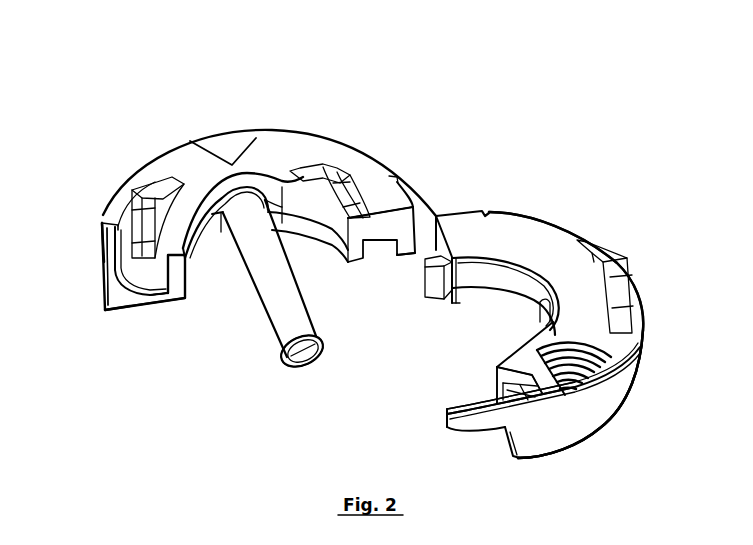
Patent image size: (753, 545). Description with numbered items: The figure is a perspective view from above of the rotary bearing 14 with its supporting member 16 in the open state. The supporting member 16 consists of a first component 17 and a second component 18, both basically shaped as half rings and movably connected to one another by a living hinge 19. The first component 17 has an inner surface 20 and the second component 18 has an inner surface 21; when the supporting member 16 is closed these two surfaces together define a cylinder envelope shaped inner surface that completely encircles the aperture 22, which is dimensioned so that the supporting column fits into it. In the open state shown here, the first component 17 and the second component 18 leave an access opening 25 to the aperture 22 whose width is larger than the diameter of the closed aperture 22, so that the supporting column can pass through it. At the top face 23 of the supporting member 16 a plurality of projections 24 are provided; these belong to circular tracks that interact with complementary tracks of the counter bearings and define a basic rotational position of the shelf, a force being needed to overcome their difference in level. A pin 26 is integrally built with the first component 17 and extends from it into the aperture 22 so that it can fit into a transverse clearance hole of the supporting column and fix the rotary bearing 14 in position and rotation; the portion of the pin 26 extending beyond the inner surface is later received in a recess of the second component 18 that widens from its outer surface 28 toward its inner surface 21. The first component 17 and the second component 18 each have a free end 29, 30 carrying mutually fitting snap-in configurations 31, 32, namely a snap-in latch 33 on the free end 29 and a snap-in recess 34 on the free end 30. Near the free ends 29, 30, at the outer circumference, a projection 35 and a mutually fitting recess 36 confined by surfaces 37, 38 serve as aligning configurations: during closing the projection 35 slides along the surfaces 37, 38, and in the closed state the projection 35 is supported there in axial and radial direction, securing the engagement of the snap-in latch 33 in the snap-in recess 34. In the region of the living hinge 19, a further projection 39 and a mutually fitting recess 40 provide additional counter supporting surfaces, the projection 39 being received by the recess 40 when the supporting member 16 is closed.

The rotary bearing 14 is at (492, 123).
The supporting member 16 is at (181, 158).
The first component 17 is at (287, 145).
The second component 18 is at (555, 235).
The living hinge 19 is at (421, 205).
The inner surface 20 is at (200, 220).
The inner surface 21 is at (503, 273).
The aperture 22 is at (478, 347).
The top face 23 is at (348, 157).
The projections 24 is at (140, 193).
The access opening 25 is at (255, 412).
The pin 26 is at (249, 220).
The outer surface 28 is at (620, 388).
The free end 29 is at (92, 311).
The free end 30 is at (500, 465).
The snap-in configuration 31 is at (152, 296).
The snap-in configuration 32 is at (501, 394).
The snap-in latch 33 is at (152, 296).
The snap-in recess 34 is at (501, 394).
The projection 35 is at (473, 428).
The recess 36 is at (103, 247).
The surface 37 is at (107, 266).
The surface 38 is at (113, 268).
The projection 39 is at (436, 296).
The recess 40 is at (376, 272).